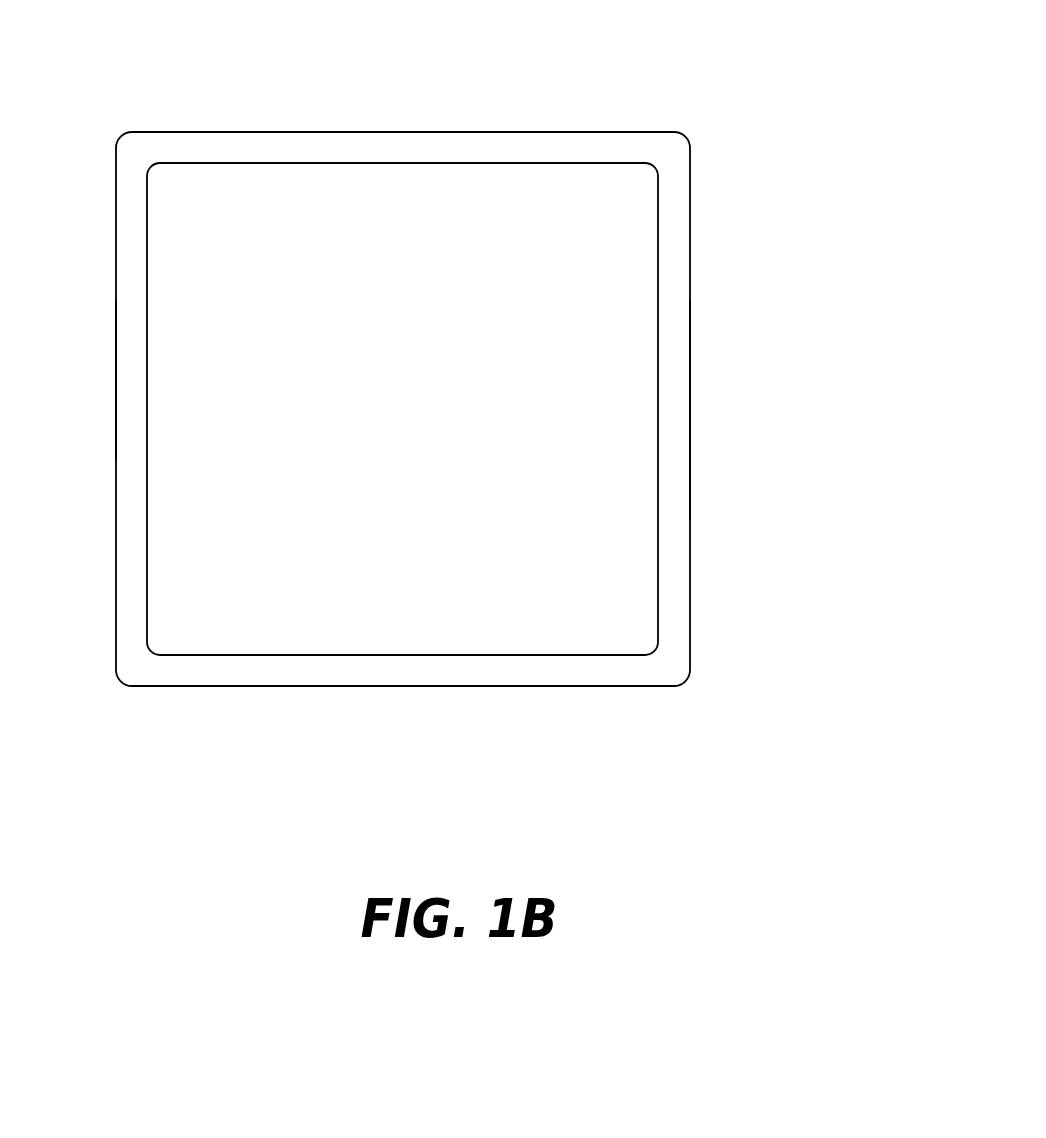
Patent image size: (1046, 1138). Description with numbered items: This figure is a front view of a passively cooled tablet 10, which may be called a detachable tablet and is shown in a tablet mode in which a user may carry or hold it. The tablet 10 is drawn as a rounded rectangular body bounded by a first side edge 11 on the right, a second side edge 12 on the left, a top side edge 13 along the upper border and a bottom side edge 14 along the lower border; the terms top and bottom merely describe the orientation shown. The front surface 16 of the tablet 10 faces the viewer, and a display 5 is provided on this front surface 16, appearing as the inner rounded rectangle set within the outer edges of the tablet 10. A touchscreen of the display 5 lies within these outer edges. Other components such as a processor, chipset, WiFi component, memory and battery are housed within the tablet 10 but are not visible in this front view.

The tablet 10 is at (800, 88).
The display 5 is at (615, 491).
The first side edge 11 is at (690, 344).
The second side edge 12 is at (116, 378).
The top side edge 13 is at (462, 132).
The bottom side edge 14 is at (598, 686).
The front surface 16 is at (298, 150).